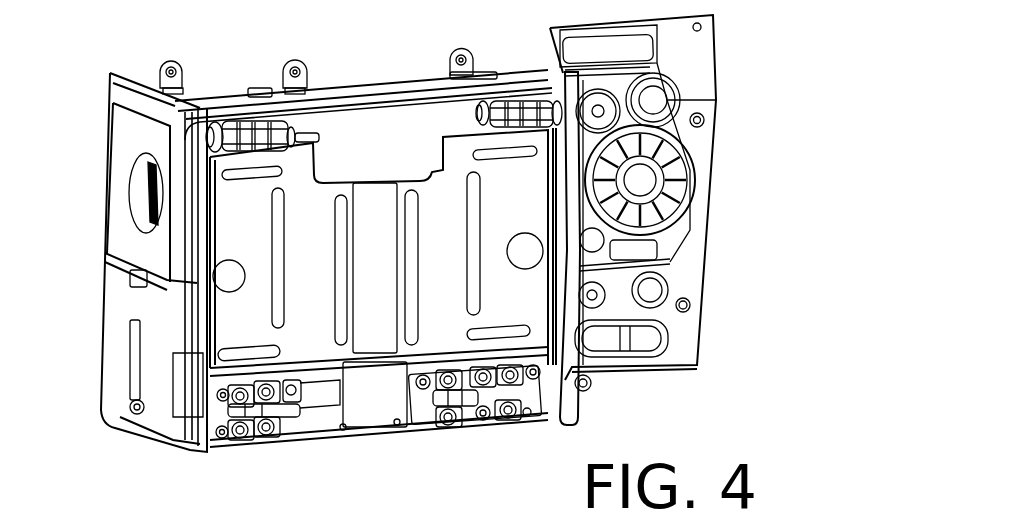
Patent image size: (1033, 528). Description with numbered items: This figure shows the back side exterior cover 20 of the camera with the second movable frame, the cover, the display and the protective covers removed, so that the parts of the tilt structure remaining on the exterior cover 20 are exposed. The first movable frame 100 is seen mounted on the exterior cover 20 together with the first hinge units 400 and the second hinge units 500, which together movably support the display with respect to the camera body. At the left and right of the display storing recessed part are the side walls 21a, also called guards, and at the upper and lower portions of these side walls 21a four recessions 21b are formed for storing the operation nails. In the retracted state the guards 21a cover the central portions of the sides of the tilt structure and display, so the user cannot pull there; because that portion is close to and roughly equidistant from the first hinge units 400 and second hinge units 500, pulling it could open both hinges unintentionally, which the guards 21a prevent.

The exterior cover 20 is at (700, 70).
The side walls 21a is at (197, 313).
The recessions 21b is at (190, 172).
The first movable frame 100 is at (313, 202).
The first hinge units 400 is at (263, 447).
The second hinge units 500 is at (247, 111).